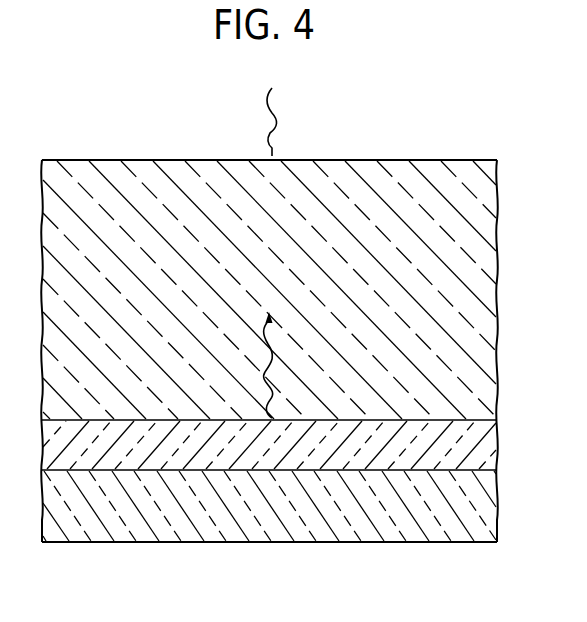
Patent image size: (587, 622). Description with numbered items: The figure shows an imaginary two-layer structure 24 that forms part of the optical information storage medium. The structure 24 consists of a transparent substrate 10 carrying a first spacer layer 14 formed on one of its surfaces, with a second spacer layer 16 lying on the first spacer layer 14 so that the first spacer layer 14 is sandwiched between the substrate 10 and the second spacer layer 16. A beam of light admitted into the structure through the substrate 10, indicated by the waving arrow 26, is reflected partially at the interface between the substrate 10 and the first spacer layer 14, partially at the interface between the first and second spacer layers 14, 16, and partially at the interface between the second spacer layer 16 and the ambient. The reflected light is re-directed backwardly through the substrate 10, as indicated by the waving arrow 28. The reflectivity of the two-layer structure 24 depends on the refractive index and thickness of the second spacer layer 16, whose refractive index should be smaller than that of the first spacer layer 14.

The transparent substrate 10 is at (427, 172).
The first spacer layer 14 is at (495, 438).
The second spacer layer 16 is at (403, 530).
The imaginary two-layer structure 24 is at (131, 138).
The waving arrow 26 is at (277, 113).
The waving arrow 28 is at (273, 353).